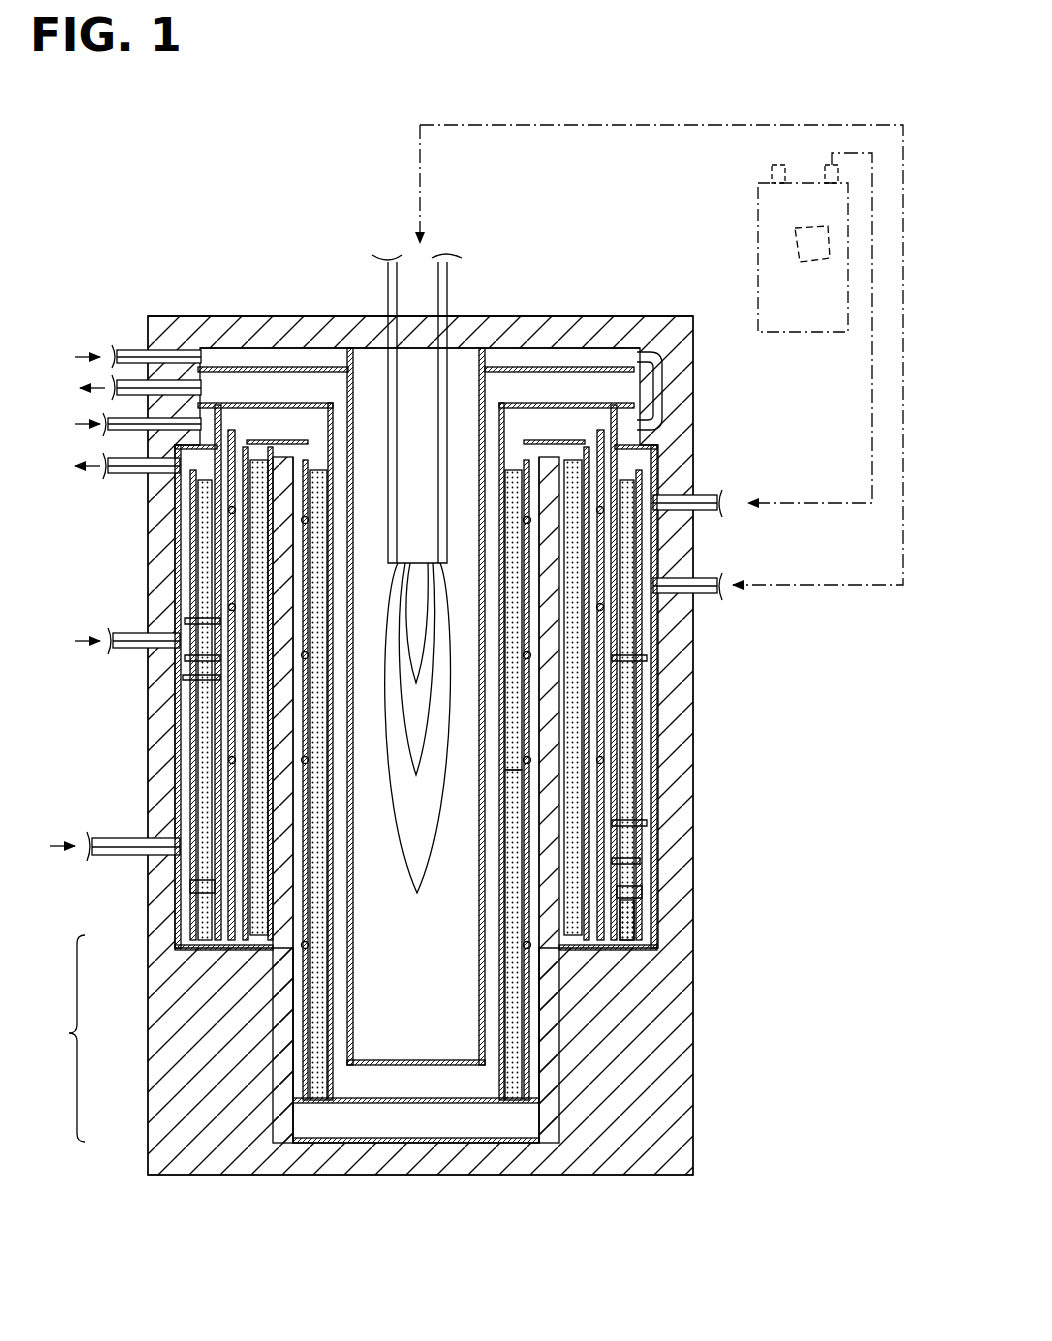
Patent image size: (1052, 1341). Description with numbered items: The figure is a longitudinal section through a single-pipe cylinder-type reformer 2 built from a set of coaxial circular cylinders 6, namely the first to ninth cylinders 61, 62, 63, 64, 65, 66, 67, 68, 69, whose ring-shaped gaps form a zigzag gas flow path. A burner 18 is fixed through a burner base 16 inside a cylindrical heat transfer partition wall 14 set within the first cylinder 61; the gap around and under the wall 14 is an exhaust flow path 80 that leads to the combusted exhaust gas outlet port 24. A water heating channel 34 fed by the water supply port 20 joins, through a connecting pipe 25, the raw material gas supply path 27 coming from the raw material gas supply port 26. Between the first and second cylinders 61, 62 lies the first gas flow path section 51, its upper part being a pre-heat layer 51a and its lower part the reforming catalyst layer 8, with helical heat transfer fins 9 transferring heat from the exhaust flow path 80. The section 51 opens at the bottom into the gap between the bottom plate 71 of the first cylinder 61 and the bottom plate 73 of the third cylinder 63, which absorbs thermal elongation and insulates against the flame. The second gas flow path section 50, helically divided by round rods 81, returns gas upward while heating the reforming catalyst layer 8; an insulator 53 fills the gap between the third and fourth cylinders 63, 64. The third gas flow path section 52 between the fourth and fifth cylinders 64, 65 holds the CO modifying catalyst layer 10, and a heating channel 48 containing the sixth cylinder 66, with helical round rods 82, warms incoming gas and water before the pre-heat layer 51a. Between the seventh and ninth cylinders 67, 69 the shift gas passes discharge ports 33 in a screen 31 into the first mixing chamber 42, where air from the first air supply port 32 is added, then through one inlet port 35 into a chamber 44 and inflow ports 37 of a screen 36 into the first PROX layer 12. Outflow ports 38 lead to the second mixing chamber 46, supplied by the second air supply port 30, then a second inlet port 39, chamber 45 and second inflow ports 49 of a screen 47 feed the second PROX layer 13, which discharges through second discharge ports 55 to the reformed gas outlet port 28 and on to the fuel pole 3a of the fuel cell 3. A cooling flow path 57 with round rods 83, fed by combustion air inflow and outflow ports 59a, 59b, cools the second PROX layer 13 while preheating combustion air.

The reformer 2 is at (147, 292).
The solid-state polymer-type fuel cell 3 is at (760, 205).
The fuel pole 3a is at (795, 242).
The circular cylinders 6 is at (69, 1033).
The reforming catalyst layer 8 is at (510, 1106).
The heat transfer fins 9 is at (530, 1080).
The CO modifying catalyst layer 10 is at (630, 938).
The first PROX layer 12 is at (520, 742).
The second PROX layer 13 is at (628, 540).
The heat transfer partition wall 14 is at (366, 1066).
The burner base 16 is at (598, 332).
The burner 18 is at (430, 292).
The water supply port 20 is at (150, 349).
The combusted exhaust gas outlet port 24 is at (150, 385).
The connecting pipe 25 is at (657, 388).
The raw material gas supply port 26 is at (135, 422).
The raw material gas supply path 27 is at (205, 365).
The reformed gas outlet port 28 is at (135, 468).
The second air supply port 30 is at (150, 641).
The screen 31 is at (225, 905).
The first air supply port 32 is at (118, 838).
The discharge ports 33 is at (195, 887).
The water heating channel 34 is at (245, 402).
The inlet port 35 is at (150, 850).
The screen 36 is at (617, 800).
The inflow ports 37 is at (604, 785).
The outflow ports 38 is at (200, 680).
The second inlet port 39 is at (200, 662).
The first mixing chamber 42 is at (640, 861).
The chamber 44 is at (647, 824).
The chamber 45 is at (647, 660).
The second mixing chamber 46 is at (642, 675).
The screen 47 is at (200, 620).
The heating channel 48 is at (280, 438).
The second inflow ports 49 is at (229, 607).
The second gas flow path section 50 is at (642, 893).
The first gas flow path section 51 is at (575, 700).
The pre-heat layer 51a is at (502, 402).
The third gas flow path section 52 is at (590, 770).
The insulator 53 is at (660, 1122).
The second discharge ports 55 is at (657, 455).
The cooling flow path 57 is at (657, 640).
The combustion air inflow port 59a is at (700, 506).
The combustion air outflow port 59b is at (700, 590).
The first cylinder 61 is at (300, 1060).
The second cylinder 62 is at (300, 1000).
The third cylinder 63 is at (270, 950).
The fourth cylinder 64 is at (258, 940).
The fifth cylinder 65 is at (245, 940).
The sixth cylinder 66 is at (232, 940).
The seventh cylinder 67 is at (218, 940).
The eighth cylinder 68 is at (192, 550).
The ninth cylinder 69 is at (205, 520).
The bottom plate 71 is at (436, 1106).
The bottom plate 73 is at (540, 1132).
The exhaust flow path 80 is at (520, 1010).
The round rods 81 is at (545, 1102).
The round rods 82 is at (634, 912).
The round rods 83 is at (178, 500).